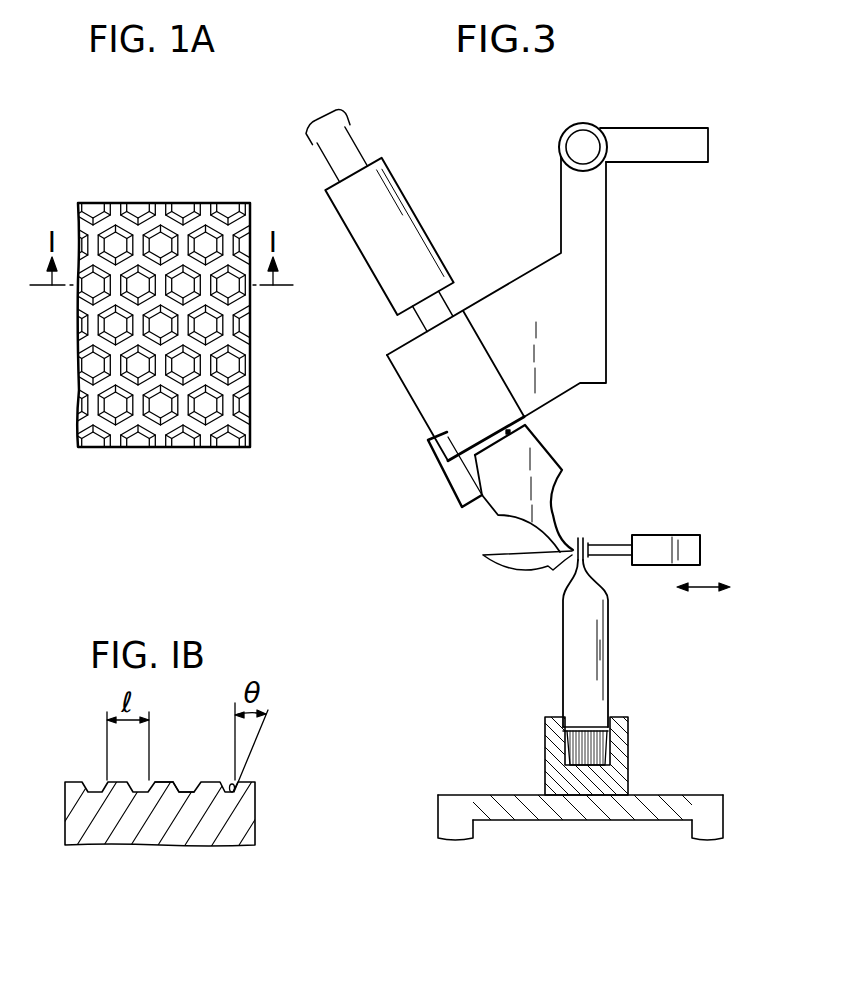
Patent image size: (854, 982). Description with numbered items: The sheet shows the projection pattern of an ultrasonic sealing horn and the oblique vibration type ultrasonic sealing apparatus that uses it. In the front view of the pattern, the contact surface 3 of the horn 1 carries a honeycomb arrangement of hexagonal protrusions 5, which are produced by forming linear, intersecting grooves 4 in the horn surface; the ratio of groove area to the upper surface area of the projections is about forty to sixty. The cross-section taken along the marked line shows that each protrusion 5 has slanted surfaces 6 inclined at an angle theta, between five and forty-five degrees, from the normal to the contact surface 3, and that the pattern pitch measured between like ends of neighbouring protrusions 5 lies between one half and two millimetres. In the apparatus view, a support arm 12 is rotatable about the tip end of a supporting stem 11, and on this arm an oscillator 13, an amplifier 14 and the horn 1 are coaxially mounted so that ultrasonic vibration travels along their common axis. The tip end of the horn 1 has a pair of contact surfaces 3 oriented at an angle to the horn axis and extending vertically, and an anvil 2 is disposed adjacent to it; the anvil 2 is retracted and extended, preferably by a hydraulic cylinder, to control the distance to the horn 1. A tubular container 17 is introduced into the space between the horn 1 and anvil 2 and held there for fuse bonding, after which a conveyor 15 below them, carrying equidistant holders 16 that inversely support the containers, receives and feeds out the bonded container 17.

In FIG. 1A, the horn 1 is at (98, 447).
In FIG. 1B, the horn 1 is at (180, 830).
In FIG. 3, the horn 1 is at (547, 465).
In FIG. 3, the anvil 2 is at (655, 540).
In FIG. 1A, the contact surface 3 is at (76, 364).
In FIG. 3, the contact surface 3 is at (590, 548).
In FIG. 1A, the groove 4 is at (203, 210).
In FIG. 1B, the groove 4 is at (232, 793).
In FIG. 1A, the protrusion 5 is at (207, 413).
In FIG. 1B, the protrusion 5 is at (162, 782).
In FIG. 1A, the slanted surface 6 is at (145, 412).
In FIG. 1B, the slanted surface 6 is at (183, 790).
In FIG. 3, the supporting stem 11 is at (642, 138).
In FIG. 3, the support arm 12 is at (595, 303).
In FIG. 3, the oscillator 13 is at (417, 237).
In FIG. 3, the amplifier 14 is at (447, 383).
In FIG. 3, the conveyor 15 is at (667, 795).
In FIG. 3, the holder 16 is at (628, 742).
In FIG. 3, the tubular container 17 is at (572, 662).